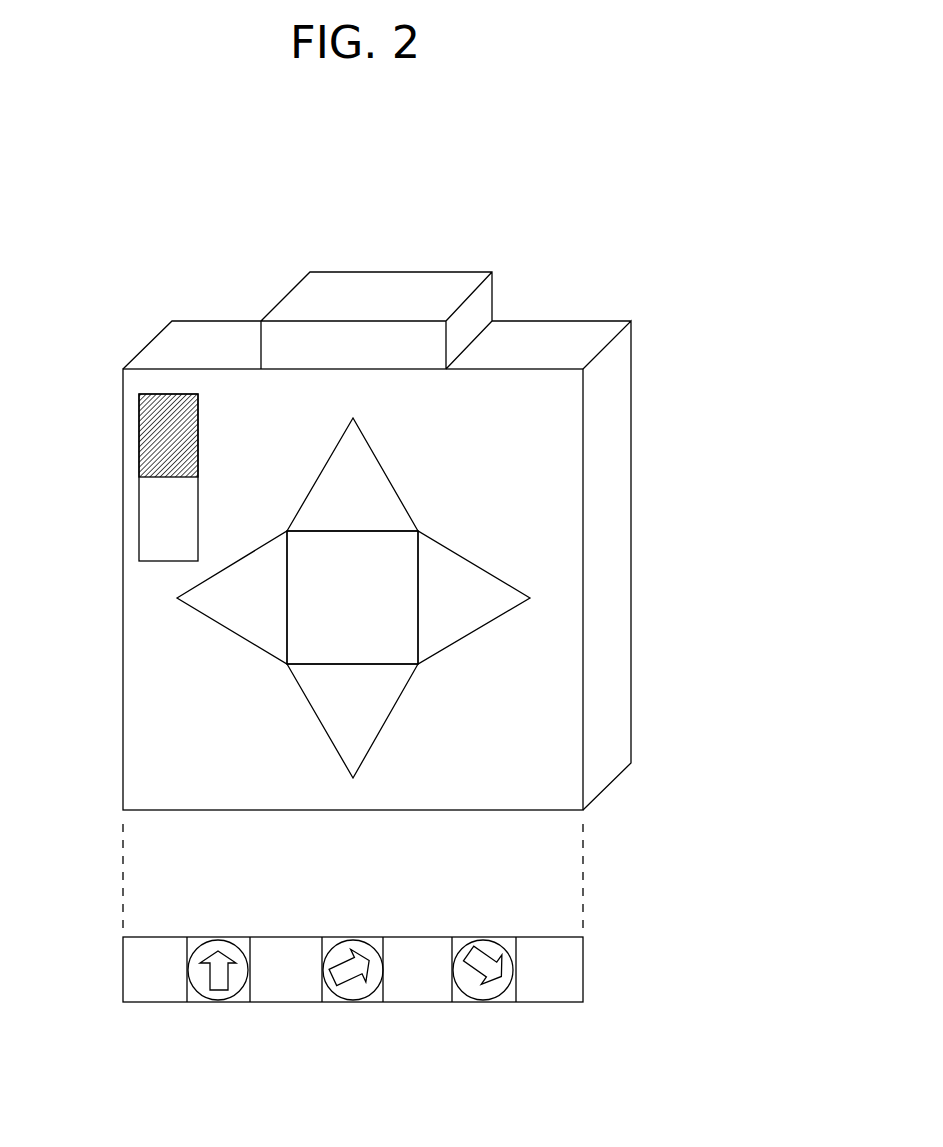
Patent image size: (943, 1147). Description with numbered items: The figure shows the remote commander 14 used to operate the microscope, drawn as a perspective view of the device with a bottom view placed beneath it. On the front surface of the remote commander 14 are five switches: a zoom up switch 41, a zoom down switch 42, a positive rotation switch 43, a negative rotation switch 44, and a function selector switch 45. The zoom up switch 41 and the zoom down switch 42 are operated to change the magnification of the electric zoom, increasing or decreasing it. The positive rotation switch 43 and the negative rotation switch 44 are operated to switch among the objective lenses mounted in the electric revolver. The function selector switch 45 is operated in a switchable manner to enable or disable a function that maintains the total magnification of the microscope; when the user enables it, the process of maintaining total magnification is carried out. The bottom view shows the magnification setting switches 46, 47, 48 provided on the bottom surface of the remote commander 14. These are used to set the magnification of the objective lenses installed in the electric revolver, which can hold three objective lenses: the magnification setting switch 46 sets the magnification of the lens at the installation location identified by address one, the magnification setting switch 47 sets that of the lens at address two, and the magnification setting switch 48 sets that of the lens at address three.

The remote commander 14 is at (683, 280).
The zoom up switch 41 is at (388, 478).
The zoom down switch 42 is at (317, 720).
The positive rotation switch 43 is at (472, 633).
The negative rotation switch 44 is at (233, 632).
The function selector switch 45 is at (140, 512).
The magnification setting switch 46 is at (218, 992).
The magnification setting switch 47 is at (353, 992).
The magnification setting switch 48 is at (485, 992).